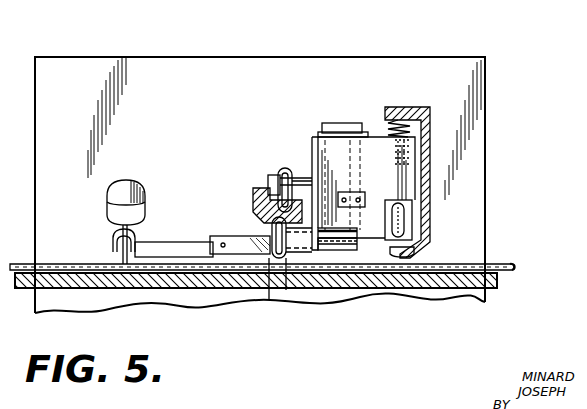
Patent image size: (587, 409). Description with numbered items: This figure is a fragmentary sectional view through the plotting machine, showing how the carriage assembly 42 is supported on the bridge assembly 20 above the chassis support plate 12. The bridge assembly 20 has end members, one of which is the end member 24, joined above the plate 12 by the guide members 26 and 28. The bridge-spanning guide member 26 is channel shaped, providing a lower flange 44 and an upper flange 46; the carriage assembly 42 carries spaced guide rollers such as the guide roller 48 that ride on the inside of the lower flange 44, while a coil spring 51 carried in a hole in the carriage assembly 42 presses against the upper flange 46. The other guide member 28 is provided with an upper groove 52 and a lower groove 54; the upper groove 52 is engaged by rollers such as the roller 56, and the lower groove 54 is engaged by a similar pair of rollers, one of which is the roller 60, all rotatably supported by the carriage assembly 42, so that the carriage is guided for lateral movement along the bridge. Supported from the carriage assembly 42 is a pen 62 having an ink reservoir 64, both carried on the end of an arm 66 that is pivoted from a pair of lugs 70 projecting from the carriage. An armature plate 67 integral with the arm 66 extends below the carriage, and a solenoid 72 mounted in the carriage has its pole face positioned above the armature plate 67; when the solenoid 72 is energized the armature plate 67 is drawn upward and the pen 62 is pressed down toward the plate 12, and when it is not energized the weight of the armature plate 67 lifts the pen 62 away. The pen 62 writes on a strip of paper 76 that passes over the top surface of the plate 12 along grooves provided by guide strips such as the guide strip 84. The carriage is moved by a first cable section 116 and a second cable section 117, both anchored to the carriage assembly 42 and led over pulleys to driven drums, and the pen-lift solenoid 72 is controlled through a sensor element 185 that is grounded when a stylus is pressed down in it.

The chassis support plate 12 is at (498, 289).
The bridge assembly 20 is at (440, 137).
The end member 24 is at (230, 57).
The guide member 26 is at (432, 118).
The guide member 28 is at (253, 208).
The carriage assembly 42 is at (310, 158).
The lower flange 44 is at (412, 254).
The upper flange 46 is at (400, 110).
The guide roller 48 is at (400, 211).
The coil spring 51 is at (393, 128).
The upper groove 52 is at (292, 198).
The lower groove 54 is at (272, 232).
The roller 56 is at (288, 174).
The roller 60 is at (287, 270).
The pen 62 is at (121, 261).
The ink reservoir 64 is at (112, 192).
The arm 66 is at (159, 242).
The armature plate 67 is at (347, 252).
The lug 70 is at (217, 236).
The solenoid 72 is at (330, 252).
The strip of paper 76 is at (500, 274).
The guide strip 84 is at (514, 264).
The first cable section 116 is at (343, 197).
The second cable section 117 is at (360, 200).
The sensor element 185 is at (315, 127).